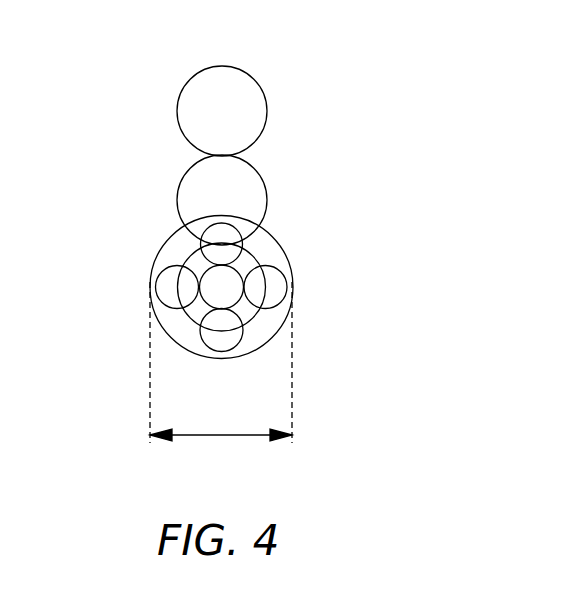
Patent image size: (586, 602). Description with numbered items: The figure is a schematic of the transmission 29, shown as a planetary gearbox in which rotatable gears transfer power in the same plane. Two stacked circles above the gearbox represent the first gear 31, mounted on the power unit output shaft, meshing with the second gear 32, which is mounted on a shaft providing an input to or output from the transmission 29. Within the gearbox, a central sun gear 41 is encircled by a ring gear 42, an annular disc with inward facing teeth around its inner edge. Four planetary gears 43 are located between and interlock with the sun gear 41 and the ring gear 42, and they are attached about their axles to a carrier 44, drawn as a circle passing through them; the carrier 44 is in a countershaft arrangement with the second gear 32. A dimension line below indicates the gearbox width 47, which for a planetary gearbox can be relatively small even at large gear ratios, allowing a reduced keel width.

The transmission 29 is at (240, 307).
The first gear 31 is at (255, 80).
The second gear 32 is at (255, 168).
The sun gear 41 is at (238, 304).
The ring gear 42 is at (273, 233).
The planetary gears 43 is at (200, 242).
The carrier 44 is at (185, 260).
The gearbox width 47 is at (220, 436).